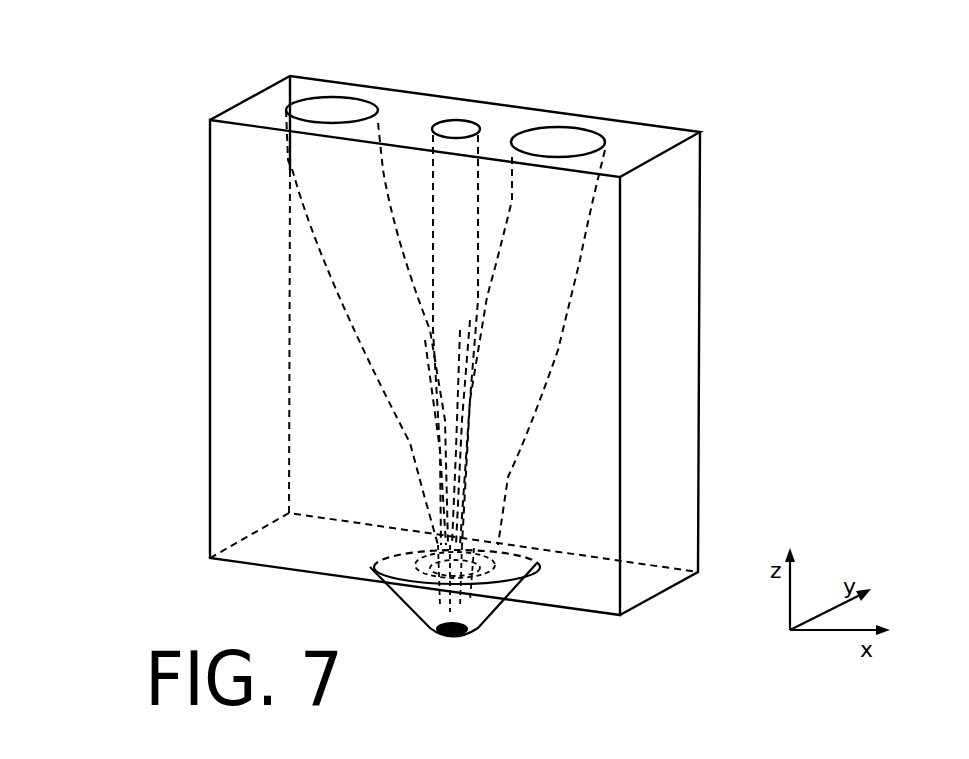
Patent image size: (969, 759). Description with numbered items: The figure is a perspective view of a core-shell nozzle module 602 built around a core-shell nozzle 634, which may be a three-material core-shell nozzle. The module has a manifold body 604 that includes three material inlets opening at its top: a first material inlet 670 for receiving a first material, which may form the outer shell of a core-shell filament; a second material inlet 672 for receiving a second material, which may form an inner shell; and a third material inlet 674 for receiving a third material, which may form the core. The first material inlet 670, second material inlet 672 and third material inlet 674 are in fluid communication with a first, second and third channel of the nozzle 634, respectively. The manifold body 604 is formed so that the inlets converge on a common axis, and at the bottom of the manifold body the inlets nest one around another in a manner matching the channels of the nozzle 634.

The core-shell nozzle module 602 is at (150, 98).
The manifold body 604 is at (660, 368).
The second material inlet 672 is at (352, 218).
The third material inlet 674 is at (452, 237).
The first material inlet 670 is at (568, 253).
The core-shell nozzle 634 is at (490, 613).